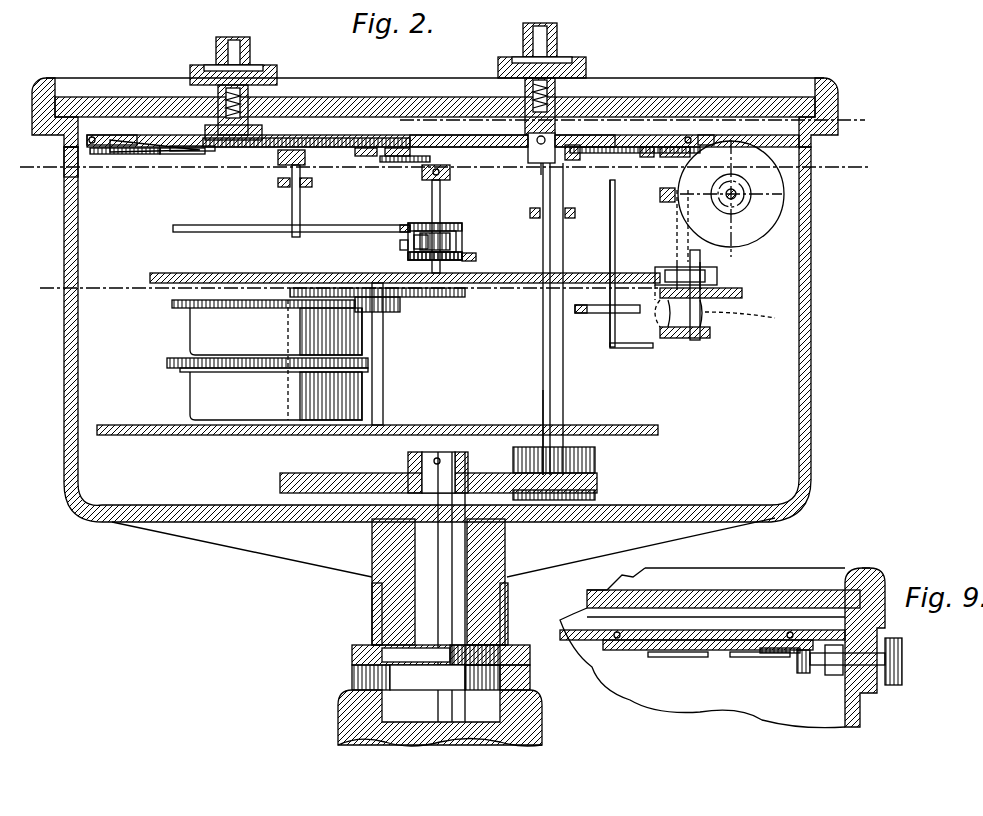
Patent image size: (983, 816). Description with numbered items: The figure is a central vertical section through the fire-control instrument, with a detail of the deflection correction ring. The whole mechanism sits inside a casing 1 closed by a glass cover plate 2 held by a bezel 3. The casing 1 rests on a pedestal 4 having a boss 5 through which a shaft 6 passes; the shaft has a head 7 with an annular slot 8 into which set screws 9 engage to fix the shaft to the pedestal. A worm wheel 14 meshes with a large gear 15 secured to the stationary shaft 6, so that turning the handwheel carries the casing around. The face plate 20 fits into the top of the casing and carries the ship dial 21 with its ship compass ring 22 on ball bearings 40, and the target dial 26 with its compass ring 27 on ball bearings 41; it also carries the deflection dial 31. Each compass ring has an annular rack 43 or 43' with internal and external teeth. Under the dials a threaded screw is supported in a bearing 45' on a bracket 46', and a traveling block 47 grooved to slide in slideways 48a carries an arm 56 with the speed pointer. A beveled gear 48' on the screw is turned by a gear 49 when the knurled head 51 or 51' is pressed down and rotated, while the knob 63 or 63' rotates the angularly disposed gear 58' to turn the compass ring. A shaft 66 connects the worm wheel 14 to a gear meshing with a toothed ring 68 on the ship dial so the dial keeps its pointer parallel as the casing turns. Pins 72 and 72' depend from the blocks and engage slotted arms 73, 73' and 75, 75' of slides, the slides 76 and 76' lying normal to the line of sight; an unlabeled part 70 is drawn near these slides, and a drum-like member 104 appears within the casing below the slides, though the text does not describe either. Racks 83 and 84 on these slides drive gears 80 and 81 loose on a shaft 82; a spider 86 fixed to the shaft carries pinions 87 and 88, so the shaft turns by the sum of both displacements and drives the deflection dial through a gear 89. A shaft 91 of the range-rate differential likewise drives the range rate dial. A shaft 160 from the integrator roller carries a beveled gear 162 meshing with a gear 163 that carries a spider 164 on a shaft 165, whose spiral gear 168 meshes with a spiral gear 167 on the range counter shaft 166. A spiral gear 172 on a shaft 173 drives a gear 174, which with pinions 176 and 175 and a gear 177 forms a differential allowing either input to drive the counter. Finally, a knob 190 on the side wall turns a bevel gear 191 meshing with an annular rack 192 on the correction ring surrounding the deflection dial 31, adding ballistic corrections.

In FIG. 2, the casing 1 is at (811, 392).
In FIG. 9, the casing 1 is at (840, 598).
In FIG. 2, the glass cover plate 2 is at (735, 100).
In FIG. 9, the glass cover plate 2 is at (757, 598).
In FIG. 2, the bezel 3 is at (820, 88).
In FIG. 9, the bezel 3 is at (868, 580).
In FIG. 2, the pedestal 4 is at (530, 675).
In FIG. 2, the boss 5 is at (505, 570).
In FIG. 2, the shaft 6 is at (390, 607).
In FIG. 2, the head 7 is at (500, 650).
In FIG. 2, the annular slot 8 is at (510, 690).
In FIG. 2, the set screws 9 is at (352, 682).
In FIG. 2, the worm wheel 14 is at (595, 462).
In FIG. 2, the large gear 15 is at (300, 473).
In FIG. 2, the face plate 20 is at (797, 147).
In FIG. 9, the face plate 20 is at (588, 642).
In FIG. 2, the ship dial 21 is at (615, 140).
In FIG. 2, the ship compass ring 22 is at (688, 137).
In FIG. 2, the target dial 26 is at (140, 150).
In FIG. 2, the compass ring 27 is at (96, 135).
In FIG. 9, the deflection dial 31 is at (720, 650).
In FIG. 2, the ball bearings 40 is at (692, 135).
In FIG. 2, the ball bearings 41 is at (64, 170).
In FIG. 2, the annular rack 43 is at (466, 130).
In FIG. 2, the annular rack 43' is at (125, 171).
In FIG. 2, the bearing 45' is at (216, 165).
In FIG. 2, the bracket 46' is at (300, 161).
In FIG. 2, the traveling block 47 is at (541, 175).
In FIG. 2, the beveled gear 48' is at (216, 128).
In FIG. 2, the slideways 48a is at (575, 136).
In FIG. 2, the gear 49 is at (644, 157).
In FIG. 2, the knurled head 51 is at (555, 33).
In FIG. 2, the knurled head 51' is at (255, 39).
In FIG. 2, the arm 56 is at (570, 160).
In FIG. 2, the angularly disposed gear 58' is at (173, 173).
In FIG. 2, the knob 63 is at (559, 85).
In FIG. 2, the knob 63' is at (255, 88).
In FIG. 2, the shaft 66 is at (563, 394).
In FIG. 2, the toothed ring 68 is at (670, 157).
In FIG. 2, the bearing block 70 is at (366, 156).
In FIG. 2, the pin 72 is at (533, 319).
In FIG. 2, the pin 72' is at (275, 193).
In FIG. 2, the arm 73 is at (562, 219).
In FIG. 2, the arm 73' is at (304, 196).
In FIG. 2, the arm 75 is at (592, 263).
In FIG. 2, the arm 75' is at (291, 240).
In FIG. 2, the slide 76 is at (405, 292).
In FIG. 2, the slide 76' is at (396, 218).
In FIG. 2, the gear 80 is at (400, 250).
In FIG. 2, the gear 81 is at (455, 230).
In FIG. 2, the shaft 82 is at (440, 198).
In FIG. 2, the rack 83 is at (470, 258).
In FIG. 2, the rack 84 is at (412, 162).
In FIG. 2, the spider 86 is at (408, 258).
In FIG. 2, the pinion 87 is at (462, 235).
In FIG. 2, the pinion 88 is at (414, 242).
In FIG. 2, the gear 89 is at (396, 156).
In FIG. 2, the shaft 91 is at (528, 160).
In FIG. 2, the drum 104 is at (377, 359).
In FIG. 2, the shaft 160 is at (600, 313).
In FIG. 2, the beveled gear 162 is at (655, 330).
In FIG. 2, the gear 163 is at (742, 292).
In FIG. 2, the spider 164 is at (717, 276).
In FIG. 2, the shaft 165 is at (677, 236).
In FIG. 2, the range counter shaft 166 is at (736, 194).
In FIG. 2, the spiral gear 167 is at (740, 170).
In FIG. 2, the spiral gear 168 is at (660, 196).
In FIG. 2, the spiral gear 172 is at (710, 338).
In FIG. 2, the shaft 173 is at (700, 314).
In FIG. 2, the gear 174 is at (700, 240).
In FIG. 2, the pinion 175 is at (655, 292).
In FIG. 2, the pinion 176 is at (700, 264).
In FIG. 2, the gear 177 is at (751, 320).
In FIG. 9, the knob 190 is at (902, 660).
In FIG. 9, the bevel gear 191 is at (804, 673).
In FIG. 9, the annular rack 192 is at (782, 653).